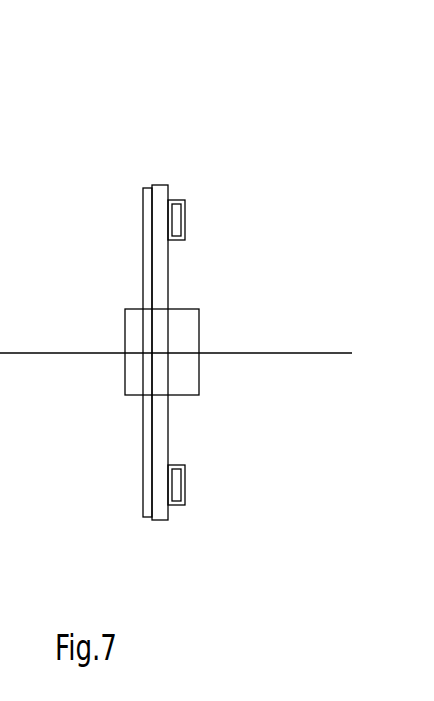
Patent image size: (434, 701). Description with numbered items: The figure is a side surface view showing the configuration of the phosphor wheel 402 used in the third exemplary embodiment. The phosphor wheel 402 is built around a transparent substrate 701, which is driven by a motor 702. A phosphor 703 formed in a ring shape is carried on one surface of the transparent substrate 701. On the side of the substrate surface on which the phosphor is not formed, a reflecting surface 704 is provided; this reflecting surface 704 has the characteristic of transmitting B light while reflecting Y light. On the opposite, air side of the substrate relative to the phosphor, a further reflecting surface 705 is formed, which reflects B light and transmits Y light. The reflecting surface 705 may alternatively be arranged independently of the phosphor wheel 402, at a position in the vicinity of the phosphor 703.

The phosphor wheel 402 is at (210, 91).
The transparent substrate 701 is at (160, 517).
The motor 702 is at (133, 388).
The phosphor 703 is at (173, 200).
The reflecting surface 704 is at (148, 518).
The reflecting surface 705 is at (185, 201).